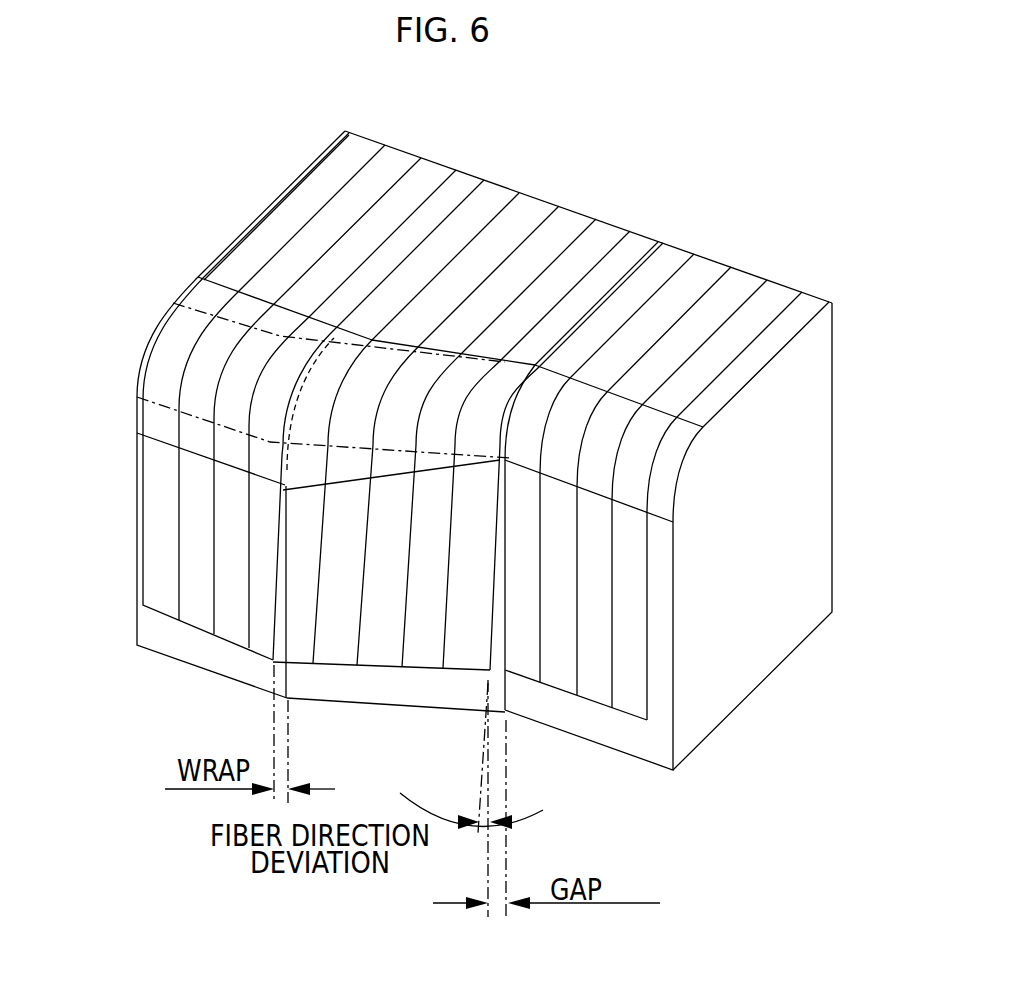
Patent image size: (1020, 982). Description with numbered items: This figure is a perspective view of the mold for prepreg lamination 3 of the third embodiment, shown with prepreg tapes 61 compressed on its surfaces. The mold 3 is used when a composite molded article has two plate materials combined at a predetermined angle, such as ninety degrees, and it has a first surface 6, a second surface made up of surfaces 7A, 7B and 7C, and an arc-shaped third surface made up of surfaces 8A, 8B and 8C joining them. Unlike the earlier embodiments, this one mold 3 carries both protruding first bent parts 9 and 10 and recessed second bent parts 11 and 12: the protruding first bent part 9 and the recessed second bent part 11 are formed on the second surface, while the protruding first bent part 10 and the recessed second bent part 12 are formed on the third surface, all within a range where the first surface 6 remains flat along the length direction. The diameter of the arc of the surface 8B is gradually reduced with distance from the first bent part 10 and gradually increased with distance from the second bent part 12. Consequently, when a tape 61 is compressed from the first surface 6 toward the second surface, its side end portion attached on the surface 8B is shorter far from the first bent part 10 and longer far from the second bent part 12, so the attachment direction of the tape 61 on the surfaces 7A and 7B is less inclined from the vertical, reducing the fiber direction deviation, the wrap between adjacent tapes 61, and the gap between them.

The mold for prepreg lamination 3 is at (812, 438).
The first surface 6 is at (608, 441).
The prepreg tape 61 is at (395, 167).
The surface of the second surface 7A is at (282, 436).
The surface of the second surface 7B is at (468, 480).
The surface of the second surface 7C is at (650, 541).
The surface of the third surface 8A is at (160, 437).
The surface of the third surface 8B is at (387, 462).
The surface of the third surface 8C is at (666, 483).
The protruding first bent part 9 is at (294, 510).
The protruding first bent part 10 is at (316, 368).
The recessed second bent part 11 is at (512, 532).
The recessed second bent part 12 is at (530, 380).